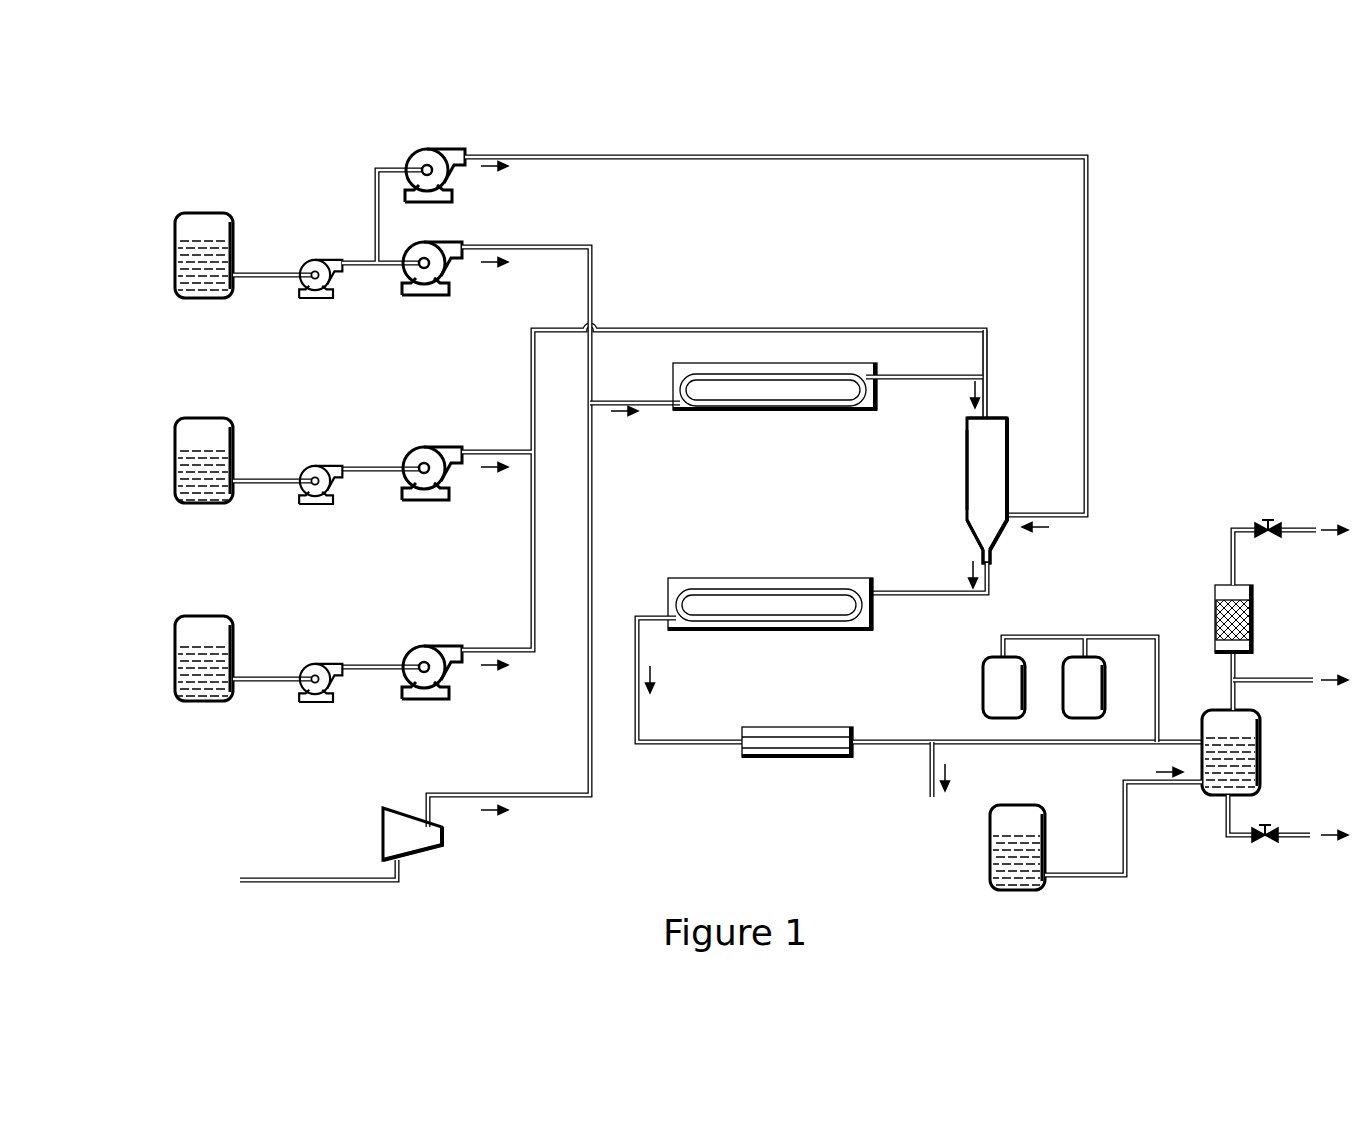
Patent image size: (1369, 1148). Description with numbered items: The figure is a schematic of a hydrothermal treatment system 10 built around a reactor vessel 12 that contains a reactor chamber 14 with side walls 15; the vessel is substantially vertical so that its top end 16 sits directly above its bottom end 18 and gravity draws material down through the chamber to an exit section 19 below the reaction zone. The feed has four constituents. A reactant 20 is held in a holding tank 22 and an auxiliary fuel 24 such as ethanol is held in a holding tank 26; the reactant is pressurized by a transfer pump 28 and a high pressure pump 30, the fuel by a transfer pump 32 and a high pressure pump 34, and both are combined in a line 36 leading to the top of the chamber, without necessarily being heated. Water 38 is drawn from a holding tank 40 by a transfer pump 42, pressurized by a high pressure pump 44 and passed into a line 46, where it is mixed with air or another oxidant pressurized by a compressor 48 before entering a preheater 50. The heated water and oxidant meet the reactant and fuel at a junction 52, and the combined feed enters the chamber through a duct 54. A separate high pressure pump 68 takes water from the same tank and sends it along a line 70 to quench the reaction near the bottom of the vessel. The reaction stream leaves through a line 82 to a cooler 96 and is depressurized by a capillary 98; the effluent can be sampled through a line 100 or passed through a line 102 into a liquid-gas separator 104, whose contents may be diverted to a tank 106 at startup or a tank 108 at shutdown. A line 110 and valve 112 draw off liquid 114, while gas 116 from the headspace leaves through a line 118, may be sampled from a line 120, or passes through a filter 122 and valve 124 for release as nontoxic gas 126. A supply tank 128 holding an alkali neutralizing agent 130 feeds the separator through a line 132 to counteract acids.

The hydrothermal treatment system 10 is at (1212, 241).
The reactor vessel 12 is at (1014, 467).
The reactor chamber 14 is at (995, 453).
The side walls 15 is at (1010, 498).
The top end 16 is at (970, 419).
The bottom end 18 is at (970, 547).
The exit section 19 is at (995, 553).
The reactant 20 is at (192, 692).
The holding tank 22 is at (176, 642).
The auxiliary fuel 24 is at (192, 500).
The holding tank 26 is at (176, 447).
The transfer pump 28 is at (318, 665).
The high pressure pump 30 is at (440, 648).
The transfer pump 32 is at (318, 467).
The high pressure pump 34 is at (442, 450).
The line 36 is at (531, 364).
The water 38 is at (190, 287).
The holding tank 40 is at (176, 240).
The transfer pump 42 is at (318, 261).
The high pressure pump 44 is at (440, 243).
The line 46 is at (592, 478).
The compressor 48 is at (383, 829).
The preheater 50 is at (758, 412).
The junction 52 is at (990, 372).
The duct 54 is at (990, 399).
The high pressure pump 68 is at (432, 149).
The line 70 is at (1089, 347).
The line 82 is at (918, 595).
The cooler 96 is at (732, 578).
The capillary 98 is at (805, 727).
The line 100 is at (930, 770).
The line 102 is at (968, 742).
The liquid-gas separator 104 is at (1262, 746).
The tank 106 is at (1092, 684).
The tank 108 is at (990, 690).
The line 110 is at (1225, 807).
The valve 112 is at (1262, 843).
The liquid 114 is at (1262, 787).
The gas 116 is at (1245, 734).
The line 118 is at (1231, 702).
The line 120 is at (1285, 681).
The filter 122 is at (1215, 614).
The valve 124 is at (1268, 520).
The nontoxic gas 126 is at (1295, 533).
The supply tank 128 is at (990, 836).
The alkali neutralizing agent 130 is at (1040, 886).
The line 132 is at (1128, 842).